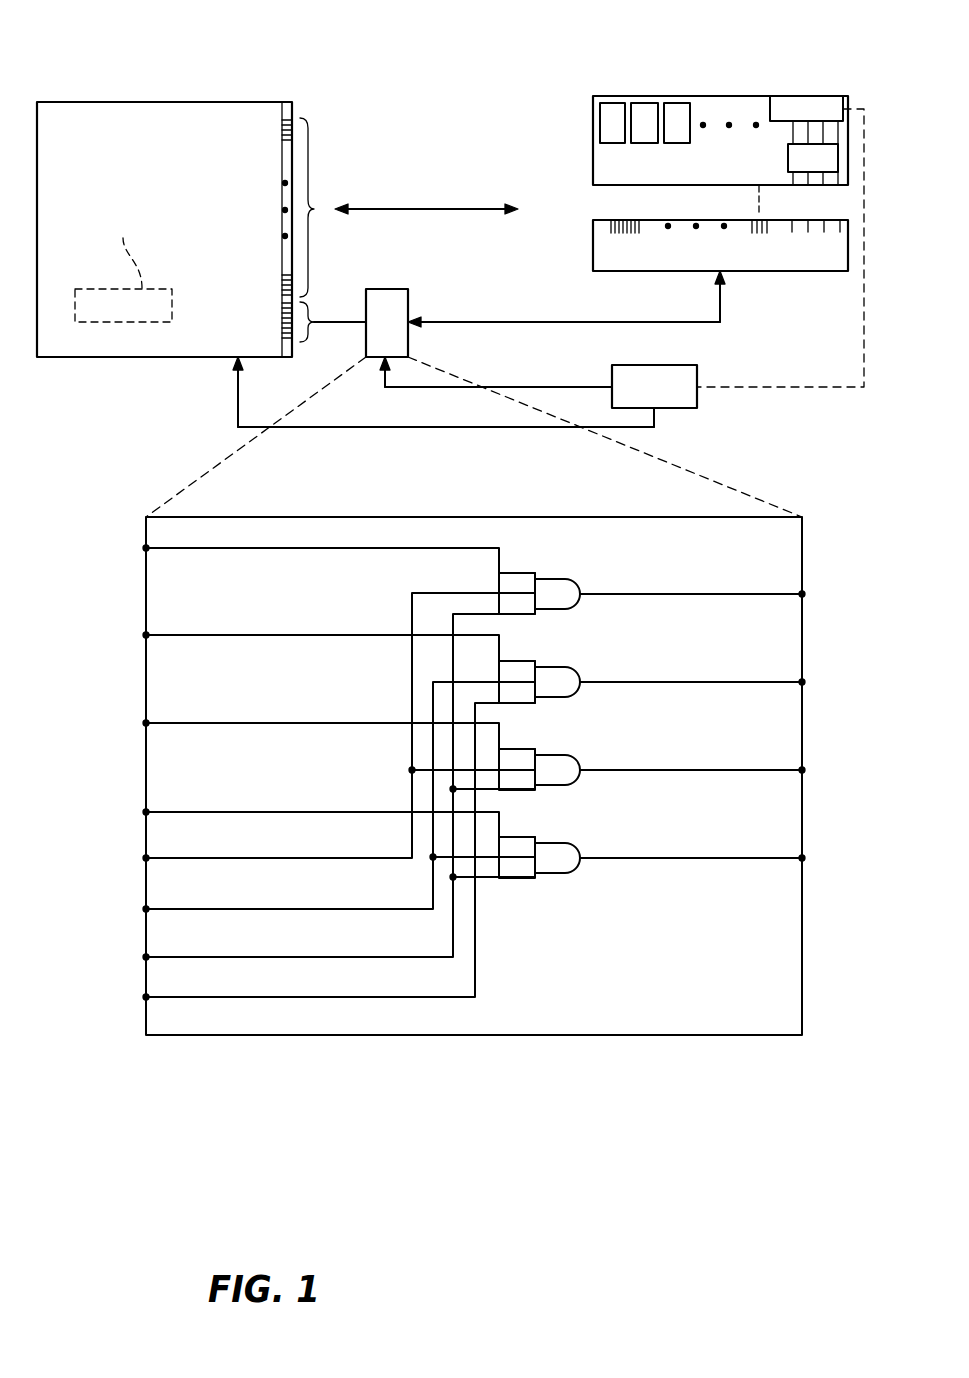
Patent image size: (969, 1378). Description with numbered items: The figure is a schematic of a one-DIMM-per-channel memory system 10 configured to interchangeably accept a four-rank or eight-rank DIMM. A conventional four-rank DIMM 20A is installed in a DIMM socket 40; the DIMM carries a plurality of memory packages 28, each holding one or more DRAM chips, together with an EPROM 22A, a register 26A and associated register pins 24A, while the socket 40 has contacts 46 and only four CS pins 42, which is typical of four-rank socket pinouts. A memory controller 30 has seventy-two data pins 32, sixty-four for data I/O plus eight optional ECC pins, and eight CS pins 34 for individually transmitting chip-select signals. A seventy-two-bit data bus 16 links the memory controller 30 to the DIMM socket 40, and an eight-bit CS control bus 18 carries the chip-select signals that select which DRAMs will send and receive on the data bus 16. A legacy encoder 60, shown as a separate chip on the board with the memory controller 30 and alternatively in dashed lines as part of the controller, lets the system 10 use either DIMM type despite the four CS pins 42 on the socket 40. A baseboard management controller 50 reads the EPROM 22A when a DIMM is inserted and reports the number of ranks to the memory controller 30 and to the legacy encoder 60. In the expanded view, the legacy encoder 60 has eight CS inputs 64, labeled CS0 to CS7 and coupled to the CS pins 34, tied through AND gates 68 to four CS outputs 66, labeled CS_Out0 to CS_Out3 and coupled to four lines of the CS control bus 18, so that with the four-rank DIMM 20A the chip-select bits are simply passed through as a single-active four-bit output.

The memory system 10 is at (203, 58).
The memory controller 30 is at (228, 102).
The data pins 32 is at (286, 102).
The CS pins 34 is at (285, 343).
The data bus 16 is at (502, 200).
The legacy encoder 60 is at (380, 289).
The CS control bus 18 is at (594, 322).
The four-rank DIMM 20A is at (688, 96).
The memory packages 28 is at (640, 103).
The EPROM 22A is at (820, 96).
The register 26A is at (798, 127).
The register pins 24A is at (833, 177).
The DIMM socket 40 is at (720, 245).
The connector contacts 46 is at (608, 220).
The CS pins 42 is at (840, 224).
The baseboard management controller 50 is at (697, 400).
The CS inputs 64 is at (146, 548).
The CS outputs 66 is at (802, 594).
The AND gates 68 is at (556, 585).